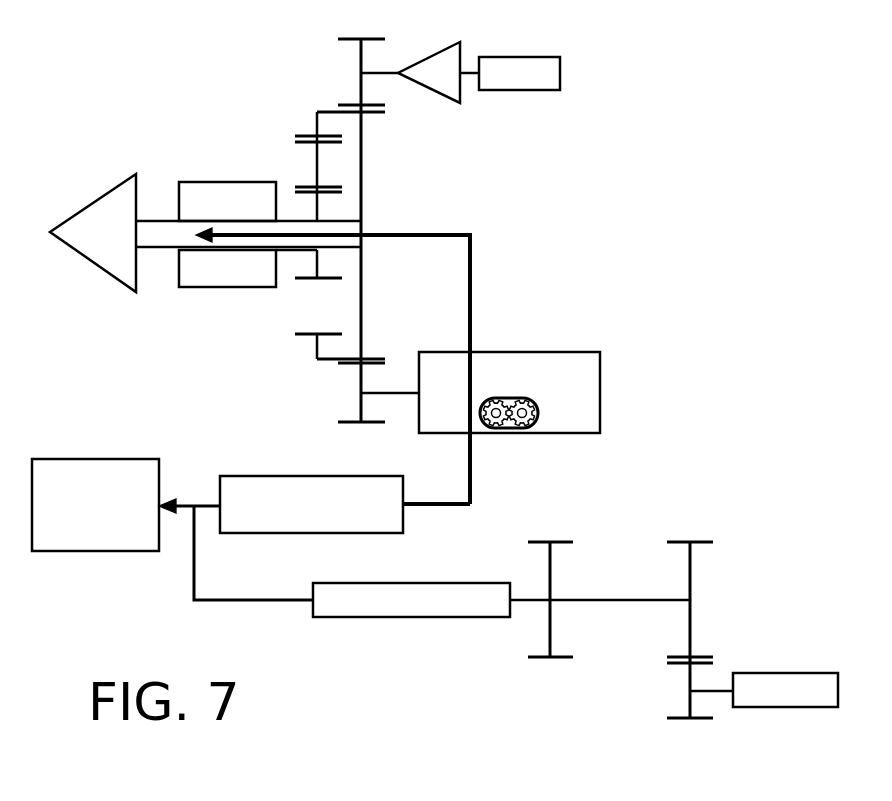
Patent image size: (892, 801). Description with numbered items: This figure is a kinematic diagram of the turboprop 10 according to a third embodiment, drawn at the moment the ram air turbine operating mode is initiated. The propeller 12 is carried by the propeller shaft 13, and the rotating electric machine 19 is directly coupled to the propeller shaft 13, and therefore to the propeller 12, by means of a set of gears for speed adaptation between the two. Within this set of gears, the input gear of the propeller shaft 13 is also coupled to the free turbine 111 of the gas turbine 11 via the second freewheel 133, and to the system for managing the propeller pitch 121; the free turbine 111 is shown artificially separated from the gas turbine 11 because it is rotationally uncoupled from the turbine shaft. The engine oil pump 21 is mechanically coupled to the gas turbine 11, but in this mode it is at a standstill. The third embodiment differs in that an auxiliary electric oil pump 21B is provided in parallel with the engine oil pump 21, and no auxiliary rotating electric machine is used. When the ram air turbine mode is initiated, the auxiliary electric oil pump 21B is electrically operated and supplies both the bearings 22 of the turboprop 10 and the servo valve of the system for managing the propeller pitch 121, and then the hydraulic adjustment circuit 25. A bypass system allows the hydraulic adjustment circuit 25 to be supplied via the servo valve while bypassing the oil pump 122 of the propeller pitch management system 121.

The turboprop 10 is at (118, 98).
The gas turbine 11 is at (793, 688).
The propeller 12 is at (97, 193).
The propeller shaft 13 is at (157, 220).
The rotating electric machine 19 is at (245, 193).
The engine oil pump 21 is at (427, 605).
The auxiliary electric oil pump 21B is at (255, 490).
The bearings 22 is at (80, 468).
The hydraulic adjustment circuit 25 is at (472, 315).
The free turbine 111 is at (517, 82).
The system for managing the propeller pitch 121 is at (590, 400).
The oil pump 122 is at (510, 398).
The second freewheel 133 is at (433, 87).